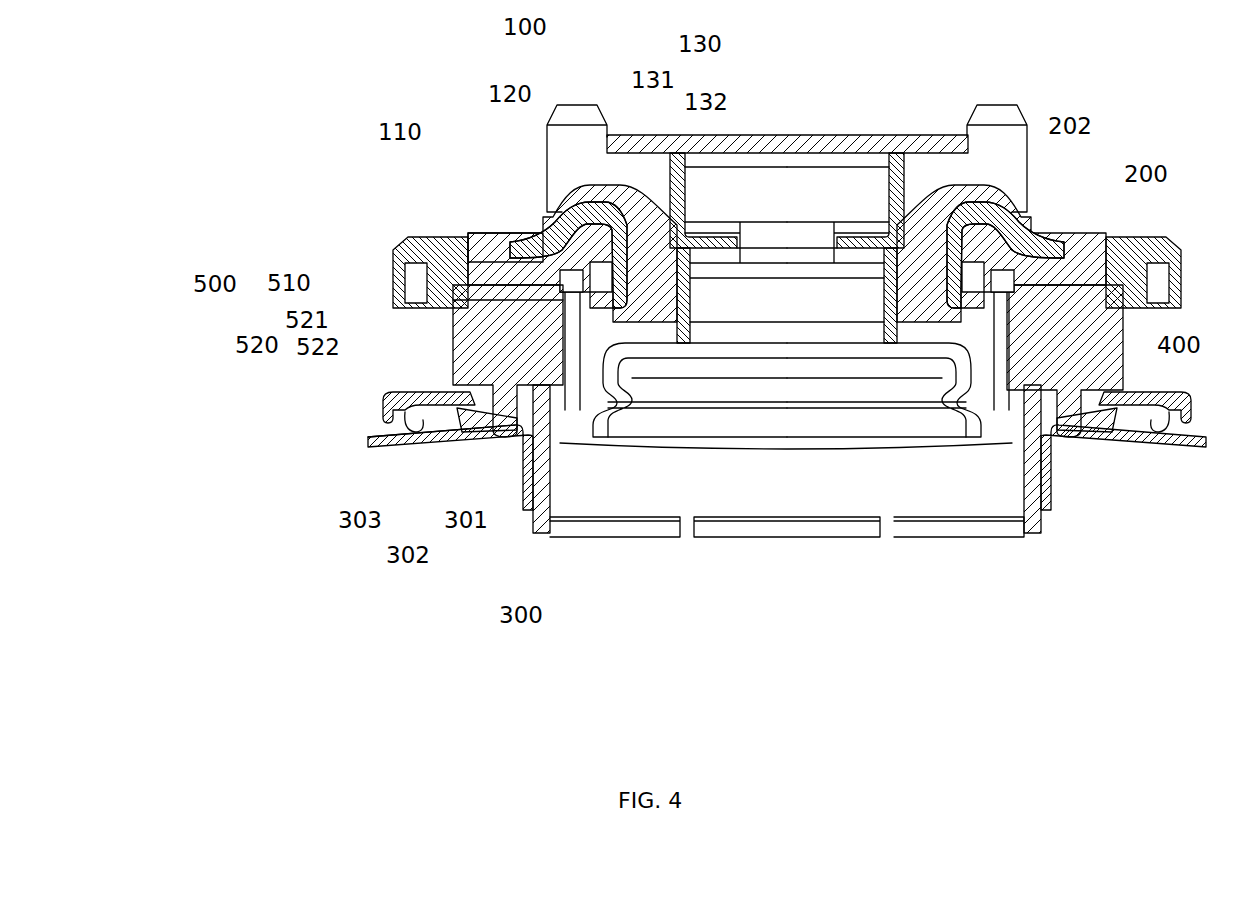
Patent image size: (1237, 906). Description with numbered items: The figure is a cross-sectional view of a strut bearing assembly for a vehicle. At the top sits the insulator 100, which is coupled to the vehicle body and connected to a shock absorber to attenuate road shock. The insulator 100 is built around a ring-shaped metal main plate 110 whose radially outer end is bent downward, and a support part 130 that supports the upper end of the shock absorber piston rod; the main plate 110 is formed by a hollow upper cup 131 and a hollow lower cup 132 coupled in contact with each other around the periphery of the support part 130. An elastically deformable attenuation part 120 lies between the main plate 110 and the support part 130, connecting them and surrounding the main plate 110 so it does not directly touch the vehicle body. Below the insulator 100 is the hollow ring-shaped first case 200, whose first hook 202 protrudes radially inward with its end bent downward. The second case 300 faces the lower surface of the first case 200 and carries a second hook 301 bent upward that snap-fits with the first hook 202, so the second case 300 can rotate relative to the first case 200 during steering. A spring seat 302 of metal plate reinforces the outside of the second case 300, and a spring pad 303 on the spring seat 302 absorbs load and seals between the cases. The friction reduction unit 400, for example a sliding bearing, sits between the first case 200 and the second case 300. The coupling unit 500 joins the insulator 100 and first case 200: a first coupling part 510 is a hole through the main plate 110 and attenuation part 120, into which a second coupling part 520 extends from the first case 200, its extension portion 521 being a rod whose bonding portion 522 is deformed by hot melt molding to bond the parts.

The insulator 100 is at (717, 33).
The main plate 110 is at (435, 250).
The attenuation part 120 is at (547, 213).
The support part 130 is at (738, 90).
The upper cup 131 is at (633, 145).
The lower cup 132 is at (716, 262).
The first case 200 is at (1083, 325).
The first hook 202 is at (1020, 217).
The second case 300 is at (543, 527).
The second hook 301 is at (510, 433).
The spring seat 302 is at (427, 433).
The spring pad 303 is at (393, 447).
The friction reduction unit 400 is at (1093, 403).
The coupling unit 500 is at (277, 263).
The first coupling part 510 is at (495, 258).
The second coupling part 520 is at (303, 365).
The extension portion 521 is at (488, 270).
The bonding portion 522 is at (513, 293).